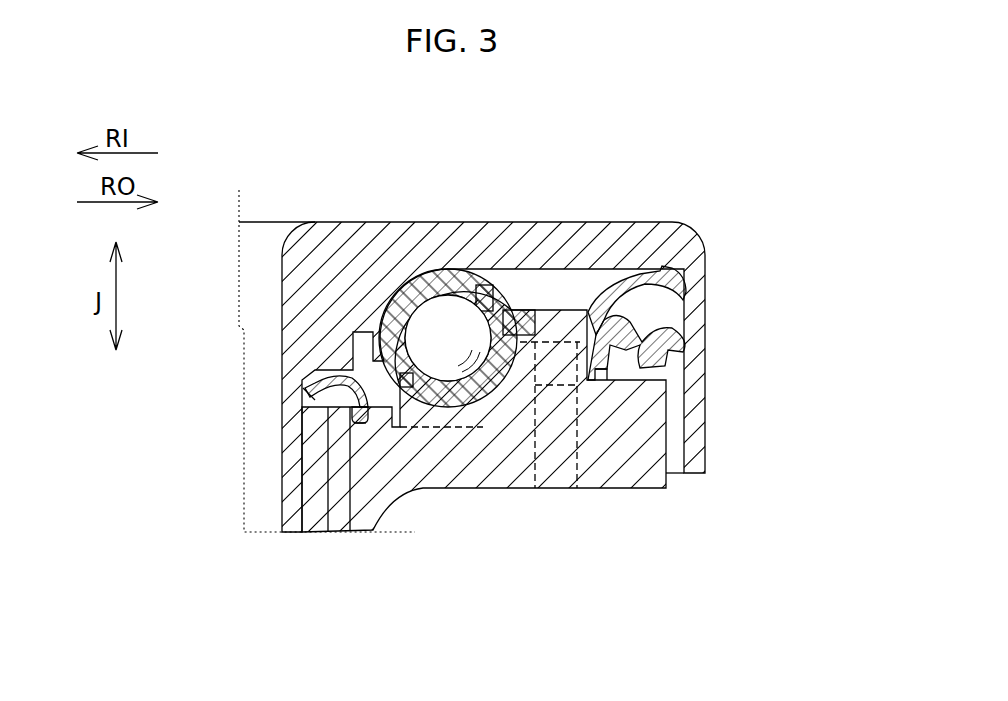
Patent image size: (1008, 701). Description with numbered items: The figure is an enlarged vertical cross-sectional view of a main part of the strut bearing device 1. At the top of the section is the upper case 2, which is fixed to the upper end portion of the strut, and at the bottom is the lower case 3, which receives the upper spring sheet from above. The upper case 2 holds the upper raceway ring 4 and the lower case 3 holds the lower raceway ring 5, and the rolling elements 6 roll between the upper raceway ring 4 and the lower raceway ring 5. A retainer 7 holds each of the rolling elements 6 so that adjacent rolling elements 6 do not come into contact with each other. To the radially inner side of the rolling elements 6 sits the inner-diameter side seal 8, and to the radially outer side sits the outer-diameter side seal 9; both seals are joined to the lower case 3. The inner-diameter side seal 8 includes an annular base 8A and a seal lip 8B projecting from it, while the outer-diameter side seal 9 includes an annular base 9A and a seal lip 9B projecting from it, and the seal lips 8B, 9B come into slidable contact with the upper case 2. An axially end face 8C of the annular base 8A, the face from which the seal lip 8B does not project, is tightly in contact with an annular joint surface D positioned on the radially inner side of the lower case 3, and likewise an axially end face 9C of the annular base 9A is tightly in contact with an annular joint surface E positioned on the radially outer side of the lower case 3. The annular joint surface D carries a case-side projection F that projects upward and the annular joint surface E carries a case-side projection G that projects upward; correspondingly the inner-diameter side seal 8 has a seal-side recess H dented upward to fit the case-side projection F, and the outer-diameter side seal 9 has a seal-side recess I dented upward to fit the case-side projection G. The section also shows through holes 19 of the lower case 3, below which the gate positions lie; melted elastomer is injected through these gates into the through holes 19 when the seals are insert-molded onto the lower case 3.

The strut bearing device 1 is at (735, 251).
The upper case 2 is at (464, 218).
The lower case 3 is at (508, 489).
The upper raceway ring 4 is at (420, 288).
The lower raceway ring 5 is at (467, 392).
The rolling elements 6 is at (455, 332).
The retainer 7 is at (412, 380).
The inner-diameter side seal 8 is at (180, 392).
The annular base 8A is at (330, 410).
The seal lip 8B is at (307, 395).
The axially end face 8C is at (362, 414).
The outer-diameter side seal 9 is at (817, 262).
The annular base 9A is at (642, 369).
The seal lip 9B is at (665, 325).
The axially end face 9C is at (623, 386).
The through holes 19 is at (573, 430).
The annular joint surface D is at (380, 425).
The annular joint surface E is at (589, 380).
The case-side projection F is at (350, 372).
The case-side projection G is at (600, 375).
The seal-side recess H is at (367, 415).
The seal-side recess I is at (603, 386).